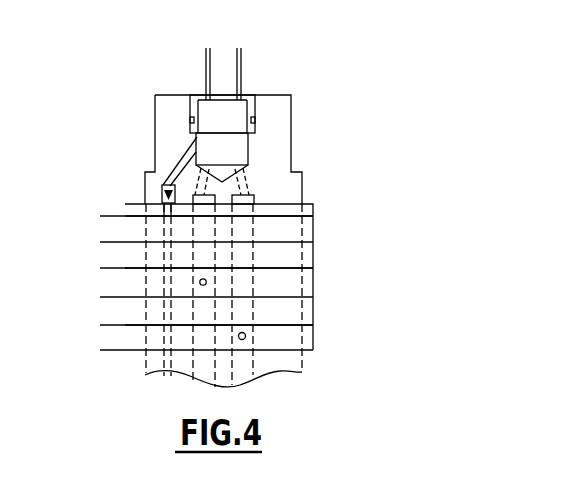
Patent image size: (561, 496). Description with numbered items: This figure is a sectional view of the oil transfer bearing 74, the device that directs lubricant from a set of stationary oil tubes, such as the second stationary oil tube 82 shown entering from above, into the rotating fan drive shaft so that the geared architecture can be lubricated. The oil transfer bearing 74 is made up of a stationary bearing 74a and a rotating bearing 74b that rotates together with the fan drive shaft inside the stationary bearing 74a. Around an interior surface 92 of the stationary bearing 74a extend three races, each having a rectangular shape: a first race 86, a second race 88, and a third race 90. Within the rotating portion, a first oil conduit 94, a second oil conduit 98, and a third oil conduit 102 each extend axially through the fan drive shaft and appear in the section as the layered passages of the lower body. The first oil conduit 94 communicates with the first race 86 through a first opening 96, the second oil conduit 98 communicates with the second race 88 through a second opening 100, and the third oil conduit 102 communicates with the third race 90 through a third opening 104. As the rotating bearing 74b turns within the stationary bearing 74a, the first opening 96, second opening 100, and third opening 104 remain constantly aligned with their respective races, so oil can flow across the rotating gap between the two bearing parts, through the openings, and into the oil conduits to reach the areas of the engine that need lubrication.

The oil transfer bearing 74 is at (148, 82).
The stationary bearing 74a is at (277, 128).
The rotating bearing 74b is at (311, 204).
The second stationary oil tube 82 is at (230, 75).
The first race 86 is at (162, 200).
The second race 88 is at (195, 200).
The third race 90 is at (257, 193).
The interior surface 92 is at (278, 204).
The first oil conduit 94 is at (290, 232).
The first opening 96 is at (160, 204).
The second oil conduit 98 is at (290, 282).
The second opening 100 is at (199, 283).
The third oil conduit 102 is at (290, 337).
The third opening 104 is at (246, 338).